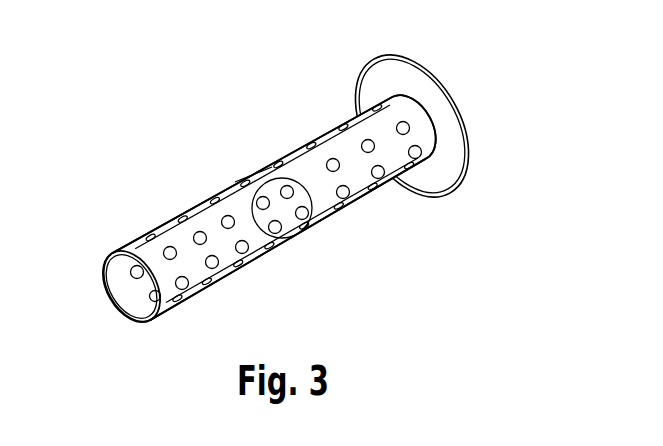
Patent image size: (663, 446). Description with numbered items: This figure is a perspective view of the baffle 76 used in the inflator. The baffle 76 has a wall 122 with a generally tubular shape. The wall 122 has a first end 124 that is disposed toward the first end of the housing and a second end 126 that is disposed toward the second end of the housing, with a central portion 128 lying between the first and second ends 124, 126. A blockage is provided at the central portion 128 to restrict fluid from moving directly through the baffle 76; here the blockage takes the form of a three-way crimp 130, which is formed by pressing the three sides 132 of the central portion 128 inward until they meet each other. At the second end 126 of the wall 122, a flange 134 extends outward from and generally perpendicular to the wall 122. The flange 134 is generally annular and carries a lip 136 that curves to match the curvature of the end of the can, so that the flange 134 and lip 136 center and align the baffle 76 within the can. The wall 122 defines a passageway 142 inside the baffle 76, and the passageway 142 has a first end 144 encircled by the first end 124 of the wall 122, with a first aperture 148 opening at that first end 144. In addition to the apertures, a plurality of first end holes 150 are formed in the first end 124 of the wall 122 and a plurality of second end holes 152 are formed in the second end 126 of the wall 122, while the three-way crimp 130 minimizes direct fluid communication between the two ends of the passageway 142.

The baffle 76 is at (231, 86).
The wall 122 is at (286, 272).
The first end 124 is at (193, 292).
The second end 126 is at (386, 197).
The central portion 128 is at (287, 157).
The three-way crimp 130 is at (240, 180).
The sides 132 is at (243, 186).
The flange 134 is at (441, 177).
The lip 136 is at (443, 88).
The passageway 142 is at (134, 298).
The first end 144 is at (108, 297).
The first aperture 148 is at (133, 323).
The first end holes 150 is at (178, 214).
The second end holes 152 is at (313, 140).